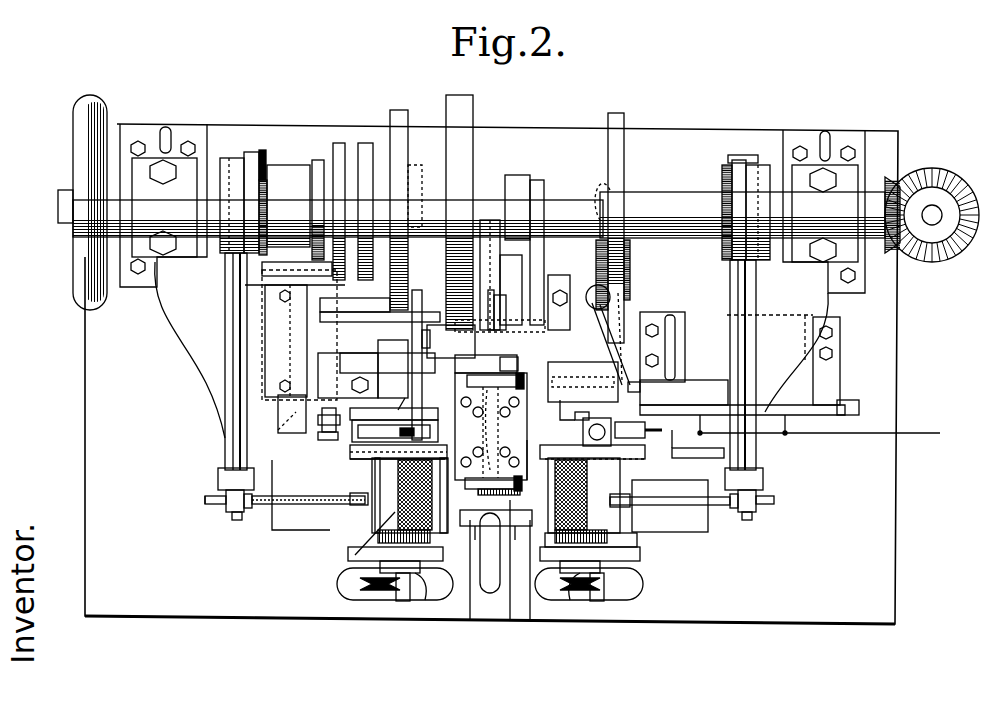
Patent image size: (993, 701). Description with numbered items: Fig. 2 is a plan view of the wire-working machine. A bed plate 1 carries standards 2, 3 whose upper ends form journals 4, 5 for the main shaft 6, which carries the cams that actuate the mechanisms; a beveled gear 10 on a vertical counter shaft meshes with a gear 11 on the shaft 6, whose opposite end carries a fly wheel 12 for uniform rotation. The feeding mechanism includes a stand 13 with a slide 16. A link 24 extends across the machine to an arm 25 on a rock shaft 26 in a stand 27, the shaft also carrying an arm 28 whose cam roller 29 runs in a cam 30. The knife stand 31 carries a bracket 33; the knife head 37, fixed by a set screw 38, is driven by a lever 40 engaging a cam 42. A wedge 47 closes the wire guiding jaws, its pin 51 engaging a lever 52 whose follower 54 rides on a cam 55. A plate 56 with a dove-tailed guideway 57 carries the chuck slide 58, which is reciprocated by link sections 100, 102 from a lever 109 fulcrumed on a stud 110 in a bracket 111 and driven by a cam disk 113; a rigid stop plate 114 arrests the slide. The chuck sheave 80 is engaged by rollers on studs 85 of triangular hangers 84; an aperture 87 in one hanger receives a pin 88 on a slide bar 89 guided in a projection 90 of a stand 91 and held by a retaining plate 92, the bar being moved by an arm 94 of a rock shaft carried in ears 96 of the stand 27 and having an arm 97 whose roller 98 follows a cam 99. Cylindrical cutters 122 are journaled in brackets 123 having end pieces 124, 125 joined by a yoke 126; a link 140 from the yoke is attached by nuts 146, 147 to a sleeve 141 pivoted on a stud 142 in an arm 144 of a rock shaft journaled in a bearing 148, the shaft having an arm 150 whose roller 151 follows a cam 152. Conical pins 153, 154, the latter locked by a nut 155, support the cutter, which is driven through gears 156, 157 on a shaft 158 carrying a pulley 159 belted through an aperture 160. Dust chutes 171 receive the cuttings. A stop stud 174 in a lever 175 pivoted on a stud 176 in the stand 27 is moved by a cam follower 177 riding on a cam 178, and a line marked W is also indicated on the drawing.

The bed plate 1 is at (895, 347).
The standard 2 is at (850, 136).
The standard 3 is at (180, 125).
The journal 4 is at (136, 188).
The journal 5 is at (848, 185).
The main shaft 6 is at (703, 192).
The beveled gear 10 is at (966, 195).
The gear 11 is at (900, 195).
The fly wheel 12 is at (73, 253).
The stand 13 is at (840, 352).
The slide 16 is at (850, 400).
The link 24 is at (328, 440).
The arm 25 is at (322, 428).
The rock shaft 26 is at (282, 419).
The stand 27 is at (278, 397).
The arm 28 is at (262, 268).
The cam roller 29 is at (320, 160).
The cam 30 is at (303, 165).
The knife stand 31 is at (618, 325).
The bracket 33 is at (598, 390).
The head 37 is at (577, 424).
The set screw 38 is at (600, 432).
The lever 40 is at (540, 190).
The cam 42 is at (518, 175).
The wedge 47 is at (625, 382).
The pin 51 is at (642, 384).
The lever 52 is at (628, 250).
The cam roll 54 is at (612, 190).
The cam 55 is at (624, 126).
The plate 56 is at (518, 605).
The dove-tailed guideway 57 is at (490, 605).
The slide 58 is at (491, 553).
The sheave 80 is at (491, 426).
The triangular plates 84 is at (467, 380).
The studs 85 is at (524, 457).
The aperture 87 is at (468, 360).
The pin 88 is at (509, 362).
The slide bar 89 is at (352, 368).
The lateral projection 90 is at (400, 352).
The stand 91 is at (439, 335).
The retaining plate 92 is at (393, 402).
The arm 94 is at (352, 345).
The ears 96 is at (345, 300).
The arm 97 is at (340, 283).
The roller 98 is at (299, 331).
The cam 99 is at (364, 143).
The link section 100 is at (492, 336).
The link section 102 is at (507, 309).
The lever 109 is at (488, 220).
The stud 110 is at (488, 266).
The bracket 111 is at (560, 276).
The cam disk 113 is at (473, 97).
The stop plate 114 is at (482, 348).
The cylindrical cutters 122 is at (432, 503).
The brackets 123 is at (378, 548).
The end piece 124 is at (385, 562).
The end piece 125 is at (358, 461).
The cross piece 126 is at (340, 530).
The link 140 is at (298, 503).
The sleeve 141 is at (230, 505).
The stud 142 is at (236, 514).
The arm 144 is at (218, 478).
The nut 146 is at (247, 510).
The nut 147 is at (226, 502).
The extended bearing 148 is at (225, 337).
The arm 150 is at (232, 158).
The roller 151 is at (252, 152).
The cam 152 is at (266, 160).
The conical pin 153 is at (506, 445).
The conical pin 154 is at (420, 595).
The nut 155 is at (438, 600).
The gear 156 is at (522, 530).
The gear 157 is at (385, 535).
The shaft 158 is at (395, 512).
The pulley 159 is at (385, 590).
The aperture 160 is at (372, 410).
The dust chutes 171 is at (278, 520).
The stud 174 is at (402, 432).
The lever 175 is at (418, 385).
The stud 176 is at (426, 330).
The cam follower 177 is at (415, 175).
The cam 178 is at (399, 110).
The work W is at (926, 428).